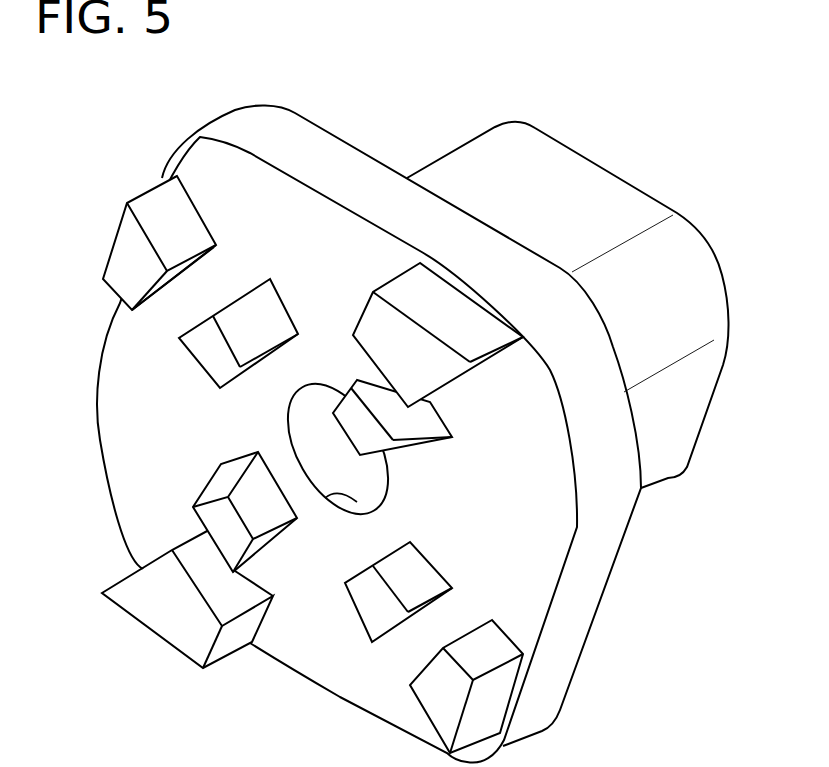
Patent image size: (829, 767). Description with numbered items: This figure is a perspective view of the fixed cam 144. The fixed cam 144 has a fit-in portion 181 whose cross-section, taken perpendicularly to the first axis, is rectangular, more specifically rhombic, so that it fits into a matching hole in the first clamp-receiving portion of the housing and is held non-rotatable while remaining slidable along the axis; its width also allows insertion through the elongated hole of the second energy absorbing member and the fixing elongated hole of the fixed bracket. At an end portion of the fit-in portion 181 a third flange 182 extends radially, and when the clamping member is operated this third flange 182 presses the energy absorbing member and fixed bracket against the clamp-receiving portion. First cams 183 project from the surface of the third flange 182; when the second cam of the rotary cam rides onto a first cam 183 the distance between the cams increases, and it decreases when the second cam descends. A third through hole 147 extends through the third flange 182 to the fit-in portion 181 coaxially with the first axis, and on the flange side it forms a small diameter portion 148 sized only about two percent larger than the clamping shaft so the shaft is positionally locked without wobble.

The fixed cam 144 is at (320, 127).
The fit-in portion 181 is at (538, 157).
The third flange 182 is at (228, 118).
The first cam 183 is at (218, 347).
The third through hole 147 is at (312, 427).
The small diameter portion 148 is at (325, 498).